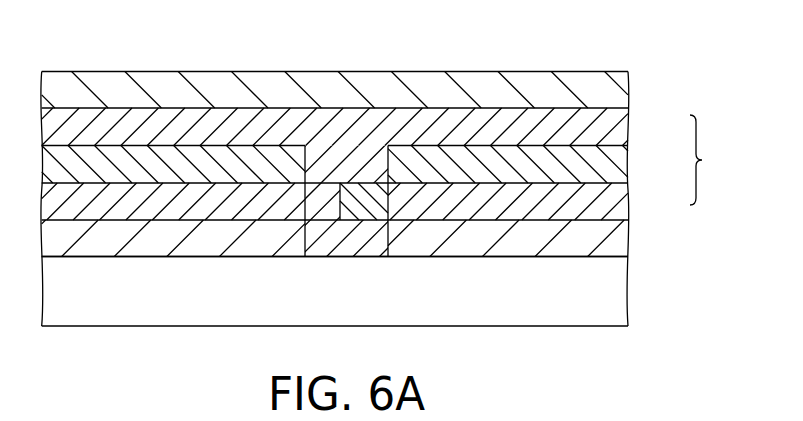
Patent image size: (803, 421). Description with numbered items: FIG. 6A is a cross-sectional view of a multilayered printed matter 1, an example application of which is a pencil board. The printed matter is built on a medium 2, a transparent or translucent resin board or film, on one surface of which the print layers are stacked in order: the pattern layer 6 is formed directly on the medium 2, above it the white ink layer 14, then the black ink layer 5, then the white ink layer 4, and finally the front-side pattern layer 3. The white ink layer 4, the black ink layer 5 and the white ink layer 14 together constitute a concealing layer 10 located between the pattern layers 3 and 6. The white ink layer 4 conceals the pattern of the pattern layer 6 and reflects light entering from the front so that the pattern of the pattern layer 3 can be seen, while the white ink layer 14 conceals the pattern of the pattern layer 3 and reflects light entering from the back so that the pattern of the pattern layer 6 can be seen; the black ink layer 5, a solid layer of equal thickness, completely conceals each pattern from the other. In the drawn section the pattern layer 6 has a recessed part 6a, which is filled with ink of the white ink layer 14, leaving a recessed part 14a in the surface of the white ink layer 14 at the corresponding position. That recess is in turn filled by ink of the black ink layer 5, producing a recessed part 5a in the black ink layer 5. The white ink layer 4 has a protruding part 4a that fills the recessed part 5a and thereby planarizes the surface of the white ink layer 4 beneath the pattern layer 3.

The multilayered printed matter 1 is at (623, 55).
The medium 2 is at (628, 300).
The pattern layer 3 is at (628, 97).
The white ink layer 4 is at (628, 130).
The protruding part 4a is at (342, 196).
The black ink layer 5 is at (628, 163).
The recessed part 5a is at (383, 160).
The pattern layer 6 is at (628, 243).
The recessed part 6a is at (386, 244).
The concealing layer 10 is at (708, 160).
The white ink layer 14 is at (628, 200).
The recessed part 14a is at (313, 208).